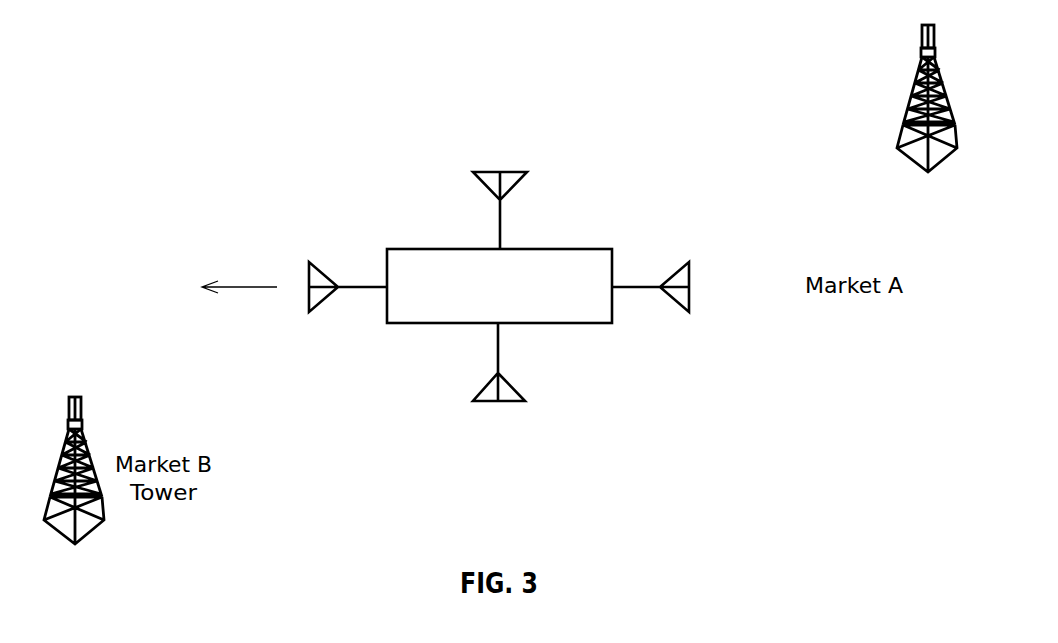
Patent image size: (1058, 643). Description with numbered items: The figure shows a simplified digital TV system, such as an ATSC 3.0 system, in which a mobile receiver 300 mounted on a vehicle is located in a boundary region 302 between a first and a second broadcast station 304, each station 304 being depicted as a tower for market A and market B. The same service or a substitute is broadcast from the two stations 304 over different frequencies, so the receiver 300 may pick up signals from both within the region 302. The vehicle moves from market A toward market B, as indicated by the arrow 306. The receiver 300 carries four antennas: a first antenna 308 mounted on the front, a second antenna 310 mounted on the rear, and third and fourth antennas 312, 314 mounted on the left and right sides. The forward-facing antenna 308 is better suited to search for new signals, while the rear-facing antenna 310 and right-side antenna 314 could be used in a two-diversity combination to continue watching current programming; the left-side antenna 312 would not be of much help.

The receiver 300 is at (552, 249).
The boundary region 302 is at (716, 173).
The broadcast station 304 is at (913, 82).
The arrow 306 is at (227, 285).
The first antenna 308 is at (318, 266).
The second antenna 310 is at (689, 262).
The third antenna 312 is at (525, 392).
The fourth antenna 314 is at (577, 150).